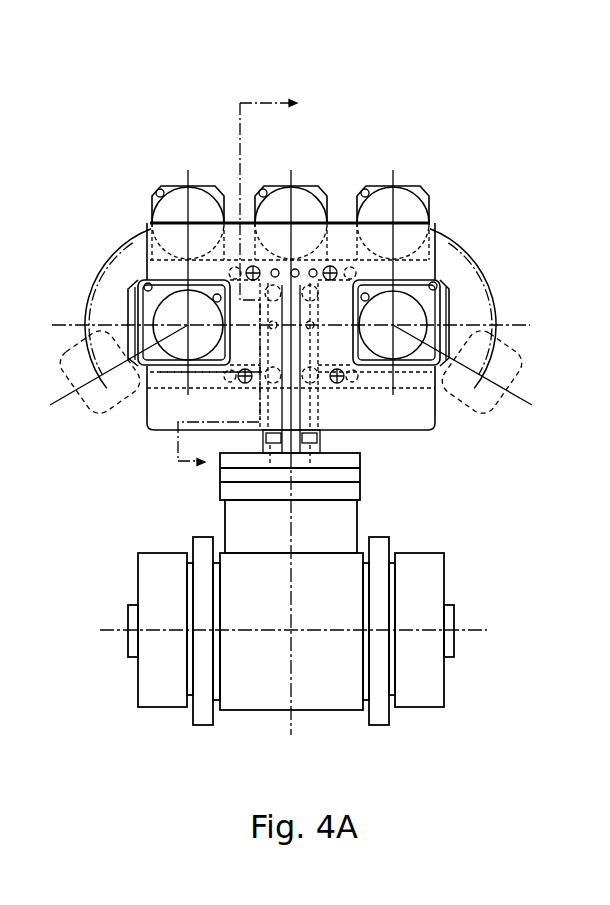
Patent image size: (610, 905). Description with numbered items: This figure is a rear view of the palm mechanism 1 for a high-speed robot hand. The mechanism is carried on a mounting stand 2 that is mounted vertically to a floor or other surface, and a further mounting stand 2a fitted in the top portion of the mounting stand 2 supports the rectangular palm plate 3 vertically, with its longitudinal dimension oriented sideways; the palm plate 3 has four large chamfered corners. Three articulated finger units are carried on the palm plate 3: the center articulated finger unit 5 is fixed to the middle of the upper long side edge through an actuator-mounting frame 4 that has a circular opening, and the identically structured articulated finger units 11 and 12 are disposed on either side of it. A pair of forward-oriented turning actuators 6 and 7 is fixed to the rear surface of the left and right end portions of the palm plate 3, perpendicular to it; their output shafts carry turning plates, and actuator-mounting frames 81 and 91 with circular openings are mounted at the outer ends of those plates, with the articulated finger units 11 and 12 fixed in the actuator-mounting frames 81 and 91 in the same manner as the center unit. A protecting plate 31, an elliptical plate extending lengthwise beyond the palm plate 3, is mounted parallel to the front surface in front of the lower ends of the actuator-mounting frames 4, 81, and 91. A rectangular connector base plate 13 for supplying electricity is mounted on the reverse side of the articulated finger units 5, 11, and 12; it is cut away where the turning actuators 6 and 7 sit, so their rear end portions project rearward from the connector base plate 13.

The palm mechanism 1 is at (531, 143).
The mounting stand 2 is at (362, 518).
The mounting stand 2a is at (320, 436).
The palm plate 3 is at (147, 272).
The actuator-mounting frame 4 is at (292, 190).
The articulated finger unit 5 is at (283, 209).
The turning actuator 6 is at (157, 335).
The turning actuator 7 is at (427, 310).
The articulated finger unit 11 is at (200, 204).
The articulated finger unit 12 is at (406, 179).
The connector base plate 13 is at (413, 403).
The protecting plate 31 is at (132, 307).
The actuator-mounting frame 81 is at (183, 186).
The actuator-mounting frame 91 is at (427, 197).